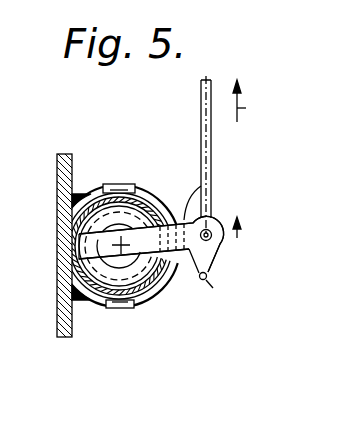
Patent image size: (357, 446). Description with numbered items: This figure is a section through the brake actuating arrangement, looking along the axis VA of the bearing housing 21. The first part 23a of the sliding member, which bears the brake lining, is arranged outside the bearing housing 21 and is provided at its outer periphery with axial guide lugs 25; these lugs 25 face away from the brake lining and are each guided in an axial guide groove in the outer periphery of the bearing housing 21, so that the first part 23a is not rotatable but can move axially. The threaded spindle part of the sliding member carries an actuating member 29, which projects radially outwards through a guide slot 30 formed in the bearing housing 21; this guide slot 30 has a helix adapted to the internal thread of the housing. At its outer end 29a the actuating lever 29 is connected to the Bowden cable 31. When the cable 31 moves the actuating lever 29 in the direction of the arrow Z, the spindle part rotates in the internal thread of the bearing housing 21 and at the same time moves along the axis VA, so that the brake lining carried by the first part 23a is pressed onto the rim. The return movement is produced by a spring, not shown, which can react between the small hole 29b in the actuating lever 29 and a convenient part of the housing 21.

The bearing housing 21 is at (90, 193).
The first part of the sliding member 23a is at (152, 300).
The axial guide lugs 25 is at (123, 184).
The actuating member 29 is at (216, 209).
The outer end of the actuating member 29a is at (226, 246).
The small hole 29b is at (210, 279).
The guide slot 30 is at (170, 207).
The Bowden cable 31 is at (202, 107).
The axis VA is at (121, 245).
The direction of arrow Z is at (248, 103).